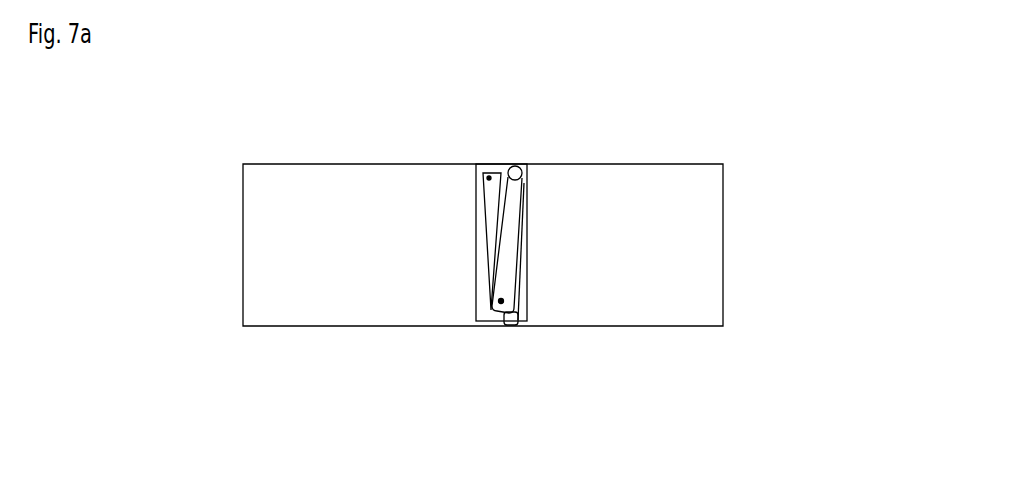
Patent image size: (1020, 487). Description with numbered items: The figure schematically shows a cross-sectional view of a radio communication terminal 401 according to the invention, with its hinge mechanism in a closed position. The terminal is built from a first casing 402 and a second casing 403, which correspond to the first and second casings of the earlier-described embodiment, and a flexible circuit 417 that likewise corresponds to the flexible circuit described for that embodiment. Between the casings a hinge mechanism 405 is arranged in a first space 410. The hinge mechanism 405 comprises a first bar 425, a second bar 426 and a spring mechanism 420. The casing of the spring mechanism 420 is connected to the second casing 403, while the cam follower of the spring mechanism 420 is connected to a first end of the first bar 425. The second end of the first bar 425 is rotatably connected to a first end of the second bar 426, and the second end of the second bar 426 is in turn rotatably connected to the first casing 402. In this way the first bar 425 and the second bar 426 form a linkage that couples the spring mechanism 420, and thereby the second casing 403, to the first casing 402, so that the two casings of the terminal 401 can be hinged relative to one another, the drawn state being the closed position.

The radio communication terminal 401 is at (551, 231).
The first casing 402 is at (284, 180).
The second casing 403 is at (665, 301).
The hinge mechanism 405 is at (518, 152).
The first space 410 is at (510, 325).
The flexible circuit 417 is at (524, 325).
The spring mechanism 420 is at (524, 165).
The first bar 425 is at (500, 281).
The second bar 426 is at (487, 196).